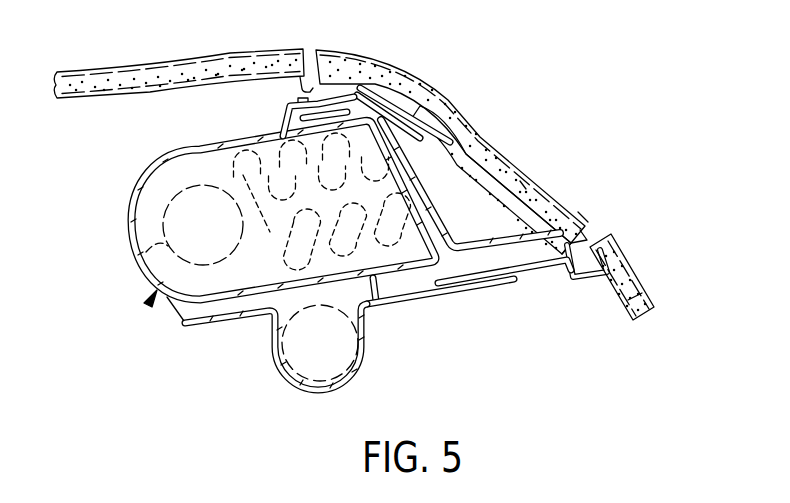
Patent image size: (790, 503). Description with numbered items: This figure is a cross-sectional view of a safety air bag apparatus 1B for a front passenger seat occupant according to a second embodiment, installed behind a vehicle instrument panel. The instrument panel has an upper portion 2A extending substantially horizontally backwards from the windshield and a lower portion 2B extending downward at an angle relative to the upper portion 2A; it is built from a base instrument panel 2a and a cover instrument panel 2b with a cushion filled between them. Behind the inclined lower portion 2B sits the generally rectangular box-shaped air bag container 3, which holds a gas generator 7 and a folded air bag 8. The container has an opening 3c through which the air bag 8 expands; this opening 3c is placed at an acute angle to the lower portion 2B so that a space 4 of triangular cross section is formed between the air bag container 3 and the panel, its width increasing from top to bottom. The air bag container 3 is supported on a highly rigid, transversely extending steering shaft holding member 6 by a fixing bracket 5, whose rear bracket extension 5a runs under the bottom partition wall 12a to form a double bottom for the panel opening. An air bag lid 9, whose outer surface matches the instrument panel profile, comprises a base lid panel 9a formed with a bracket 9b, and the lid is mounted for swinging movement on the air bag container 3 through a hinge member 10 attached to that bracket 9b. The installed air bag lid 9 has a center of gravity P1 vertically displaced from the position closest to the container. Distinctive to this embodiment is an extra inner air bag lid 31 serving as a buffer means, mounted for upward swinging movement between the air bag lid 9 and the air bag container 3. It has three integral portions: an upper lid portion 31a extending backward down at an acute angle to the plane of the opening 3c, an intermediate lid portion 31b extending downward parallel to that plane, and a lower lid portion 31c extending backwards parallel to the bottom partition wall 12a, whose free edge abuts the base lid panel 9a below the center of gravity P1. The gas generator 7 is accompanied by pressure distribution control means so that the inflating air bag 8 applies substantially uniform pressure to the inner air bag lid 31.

The safety air bag apparatus 1B is at (150, 306).
The upper portion 2A is at (250, 50).
The lower portion 2B is at (627, 243).
The base instrument panel 2a is at (618, 300).
The cover instrument panel 2b is at (647, 268).
The air bag container 3 is at (134, 190).
The opening 3c is at (404, 292).
The space 4 is at (580, 206).
The fixing bracket 5 is at (280, 377).
The rear bracket extension 5a is at (460, 298).
The steering shaft holding member 6 is at (340, 397).
The gas generator 7 is at (140, 253).
The air bag 8 is at (269, 232).
The air bag lid 9 is at (407, 74).
The base lid panel 9a is at (443, 113).
The bracket 9b is at (378, 67).
The hinge member 10 is at (286, 106).
The bottom partition wall 12a is at (505, 285).
The inner air bag lid 31 is at (492, 157).
The upper lid portion 31a is at (462, 135).
The intermediate lid portion 31b is at (442, 209).
The lower lid portion 31c is at (548, 190).
The center of gravity P1 is at (522, 183).